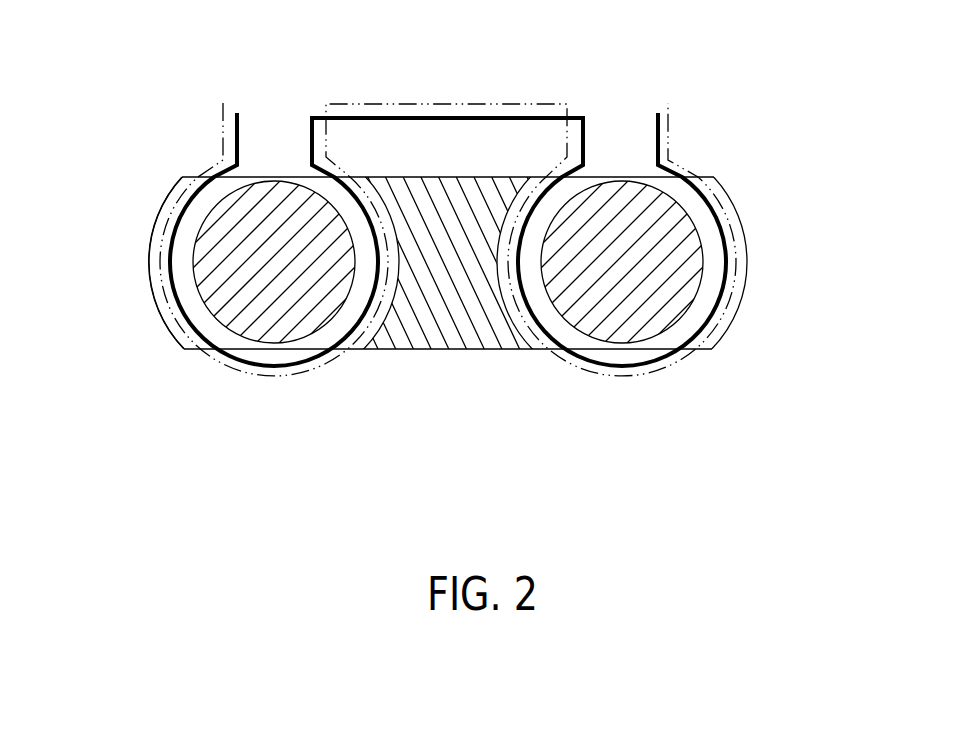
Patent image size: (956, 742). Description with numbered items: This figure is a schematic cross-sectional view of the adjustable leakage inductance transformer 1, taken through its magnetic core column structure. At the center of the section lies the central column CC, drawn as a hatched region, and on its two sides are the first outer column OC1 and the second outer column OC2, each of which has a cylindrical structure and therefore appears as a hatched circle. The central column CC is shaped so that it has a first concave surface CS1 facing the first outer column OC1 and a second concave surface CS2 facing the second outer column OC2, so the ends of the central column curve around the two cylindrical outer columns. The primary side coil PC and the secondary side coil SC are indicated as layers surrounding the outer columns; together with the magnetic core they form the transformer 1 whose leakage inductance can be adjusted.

The adjustable leakage inductance transformer 1 is at (452, 52).
The first outer column OC1 is at (275, 268).
The second outer column OC2 is at (620, 265).
The central column CC is at (436, 333).
The primary side coil PC is at (225, 355).
The secondary side coil SC is at (297, 375).
The first concave surface CS1 is at (373, 348).
The second concave surface CS2 is at (521, 338).